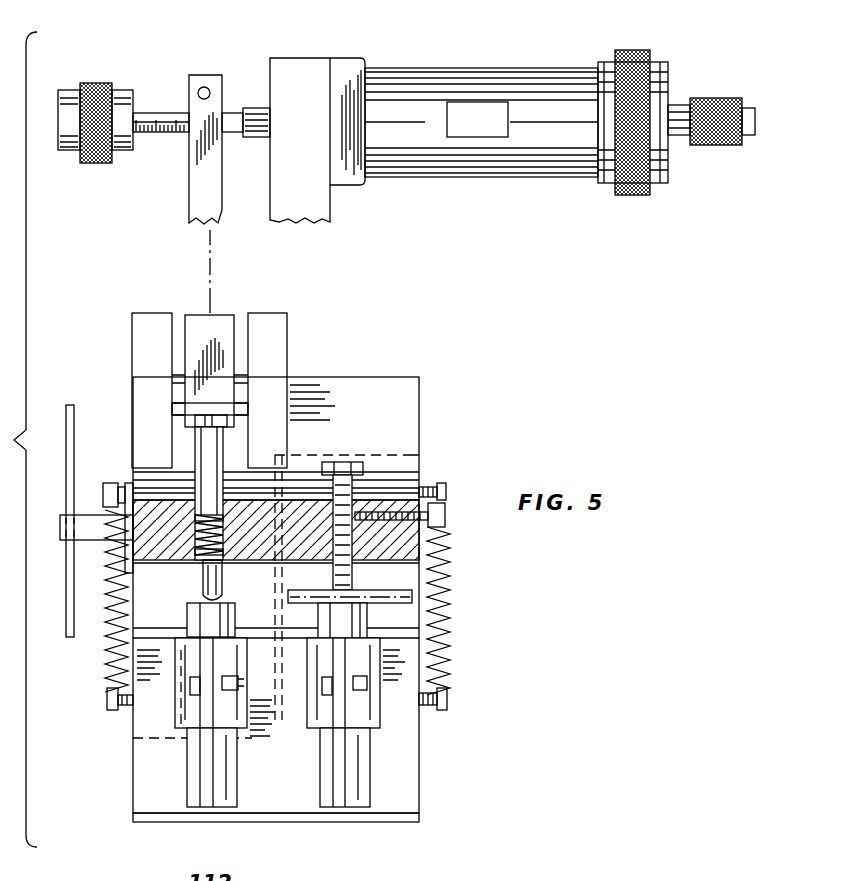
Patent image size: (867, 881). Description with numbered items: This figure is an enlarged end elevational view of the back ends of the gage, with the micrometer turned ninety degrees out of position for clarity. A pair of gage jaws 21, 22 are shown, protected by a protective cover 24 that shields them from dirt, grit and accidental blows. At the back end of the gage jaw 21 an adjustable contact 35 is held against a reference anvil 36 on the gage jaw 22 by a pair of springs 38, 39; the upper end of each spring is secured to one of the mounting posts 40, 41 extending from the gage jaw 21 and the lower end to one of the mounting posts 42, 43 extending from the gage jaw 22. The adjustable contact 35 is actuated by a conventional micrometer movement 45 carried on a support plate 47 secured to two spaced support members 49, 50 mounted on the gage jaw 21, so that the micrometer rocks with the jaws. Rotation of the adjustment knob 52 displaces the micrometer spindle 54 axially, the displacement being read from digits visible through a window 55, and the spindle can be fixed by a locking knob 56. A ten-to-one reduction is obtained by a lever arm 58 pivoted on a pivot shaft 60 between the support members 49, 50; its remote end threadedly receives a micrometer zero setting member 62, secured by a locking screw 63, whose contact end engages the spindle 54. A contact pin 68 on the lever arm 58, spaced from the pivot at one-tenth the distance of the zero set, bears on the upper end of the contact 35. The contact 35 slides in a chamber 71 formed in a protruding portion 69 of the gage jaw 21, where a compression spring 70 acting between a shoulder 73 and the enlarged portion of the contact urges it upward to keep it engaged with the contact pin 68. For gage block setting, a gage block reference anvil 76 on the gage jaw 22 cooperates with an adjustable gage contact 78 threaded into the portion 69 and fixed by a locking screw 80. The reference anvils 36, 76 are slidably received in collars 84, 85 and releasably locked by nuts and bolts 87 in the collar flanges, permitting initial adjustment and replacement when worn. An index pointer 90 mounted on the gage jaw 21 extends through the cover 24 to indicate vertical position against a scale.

The gage jaw 21 is at (408, 402).
The gage jaw 22 is at (402, 781).
The protective cover 24 is at (68, 413).
The adjustable contact 35 is at (208, 588).
The reference anvil 36 is at (198, 617).
The spring 38 is at (108, 660).
The spring 39 is at (450, 632).
The mounting post 40 is at (107, 488).
The mounting post 41 is at (445, 492).
The mounting post 42 is at (106, 708).
The mounting post 43 is at (450, 701).
The micrometer movement 45 is at (484, 62).
The support plate 47 is at (305, 58).
The support member 49 is at (142, 338).
The support member 50 is at (278, 342).
The adjustment knob 52 is at (641, 50).
The micrometer spindle 54 is at (256, 110).
The window 55 is at (498, 133).
The locking knob 56 is at (728, 98).
The lever arm 58 is at (210, 222).
The pivot shaft 60 is at (178, 406).
The micrometer zero setting member 62 is at (155, 104).
The locking screw 63 is at (205, 88).
The contact pin 68 is at (205, 421).
The protruding portion 69 is at (407, 538).
The compression spring 70 is at (225, 530).
The chamber 71 is at (200, 535).
The shoulder 73 is at (225, 549).
The gage block reference anvil 76 is at (361, 618).
The adjustable gage contact 78 is at (343, 462).
The locking screw 80 is at (446, 515).
The collar 84 is at (183, 738).
The collar 85 is at (315, 726).
The nuts and bolts 87 is at (193, 688).
The index pointer 90 is at (90, 552).